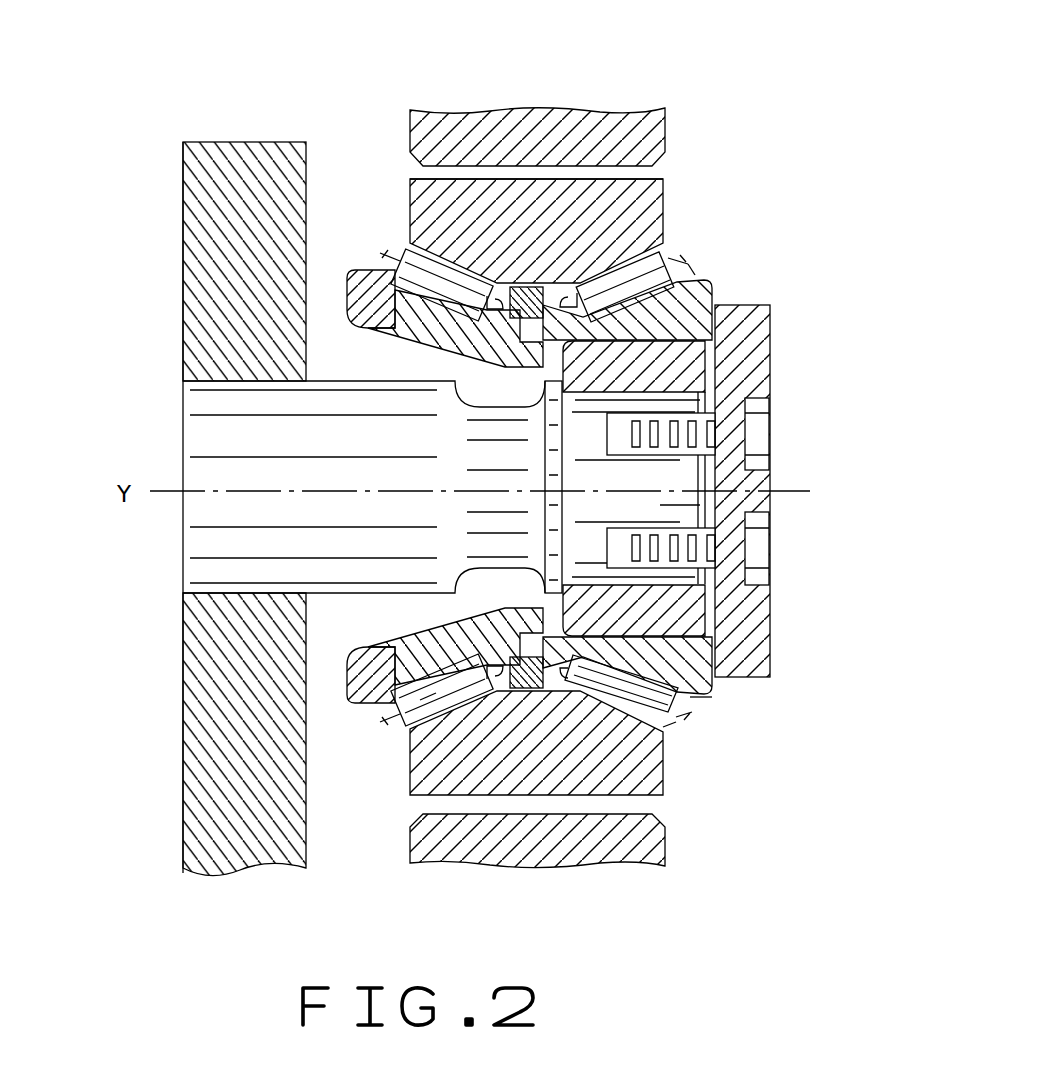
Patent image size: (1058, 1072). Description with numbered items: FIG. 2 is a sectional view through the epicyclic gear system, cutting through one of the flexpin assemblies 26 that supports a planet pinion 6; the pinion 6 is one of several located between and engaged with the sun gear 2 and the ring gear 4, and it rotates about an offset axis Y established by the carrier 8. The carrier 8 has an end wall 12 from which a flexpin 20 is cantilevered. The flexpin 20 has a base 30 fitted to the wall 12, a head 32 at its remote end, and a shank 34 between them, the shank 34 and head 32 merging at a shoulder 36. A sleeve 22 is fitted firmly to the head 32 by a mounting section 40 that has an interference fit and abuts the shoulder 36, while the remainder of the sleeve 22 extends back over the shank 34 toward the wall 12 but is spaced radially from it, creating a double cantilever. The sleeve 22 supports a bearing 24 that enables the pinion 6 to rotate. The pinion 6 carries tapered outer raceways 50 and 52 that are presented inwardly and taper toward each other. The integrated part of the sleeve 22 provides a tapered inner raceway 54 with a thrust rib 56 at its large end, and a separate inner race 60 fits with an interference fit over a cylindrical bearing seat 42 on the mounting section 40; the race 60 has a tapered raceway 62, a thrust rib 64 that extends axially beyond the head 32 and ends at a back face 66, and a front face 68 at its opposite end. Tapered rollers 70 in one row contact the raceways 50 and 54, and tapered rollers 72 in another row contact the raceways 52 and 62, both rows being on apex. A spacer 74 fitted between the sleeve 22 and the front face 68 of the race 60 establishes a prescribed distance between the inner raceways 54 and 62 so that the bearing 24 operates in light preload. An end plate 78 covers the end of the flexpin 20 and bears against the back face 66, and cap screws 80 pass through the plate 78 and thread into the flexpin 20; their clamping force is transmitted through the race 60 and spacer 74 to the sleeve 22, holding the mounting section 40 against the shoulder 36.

The sun gear 2 is at (533, 850).
The ring gear 4 is at (555, 125).
The planet pinions 6 is at (573, 787).
The carrier 8 is at (180, 760).
The wall 12 is at (213, 217).
The flexpin 20 is at (182, 452).
The sleeve 22 is at (342, 292).
The bearing 24 is at (503, 272).
The flexpin assembly 26 is at (680, 129).
The base 30 is at (240, 440).
The head 32 is at (755, 487).
The shank 34 is at (383, 510).
The shoulder 36 is at (567, 457).
The mounting section 40 is at (700, 298).
The cylindrical bearing seat 42 is at (687, 655).
The tapered outer raceway 50 is at (420, 673).
The tapered outer raceway 52 is at (663, 732).
The tapered inner raceway 54 is at (415, 700).
The thrust rib 56 is at (370, 693).
The separate inner race 60 is at (695, 275).
The tapered raceway 62 is at (667, 730).
The thrust rib 64 is at (698, 700).
The back face 66 is at (763, 675).
The front face 68 is at (533, 650).
The tapered rollers 70 is at (443, 277).
The tapered rollers 72 is at (668, 195).
The spacer 74 is at (601, 282).
The end plate 78 is at (752, 345).
The cap screws 80 is at (757, 428).